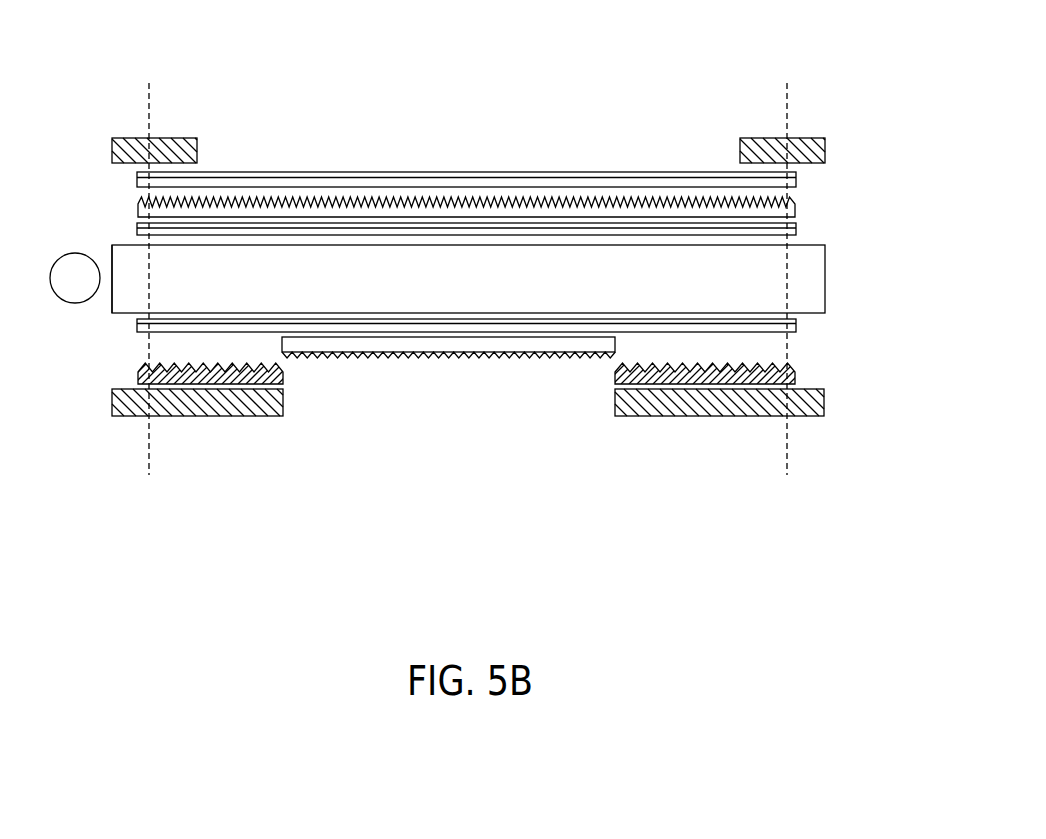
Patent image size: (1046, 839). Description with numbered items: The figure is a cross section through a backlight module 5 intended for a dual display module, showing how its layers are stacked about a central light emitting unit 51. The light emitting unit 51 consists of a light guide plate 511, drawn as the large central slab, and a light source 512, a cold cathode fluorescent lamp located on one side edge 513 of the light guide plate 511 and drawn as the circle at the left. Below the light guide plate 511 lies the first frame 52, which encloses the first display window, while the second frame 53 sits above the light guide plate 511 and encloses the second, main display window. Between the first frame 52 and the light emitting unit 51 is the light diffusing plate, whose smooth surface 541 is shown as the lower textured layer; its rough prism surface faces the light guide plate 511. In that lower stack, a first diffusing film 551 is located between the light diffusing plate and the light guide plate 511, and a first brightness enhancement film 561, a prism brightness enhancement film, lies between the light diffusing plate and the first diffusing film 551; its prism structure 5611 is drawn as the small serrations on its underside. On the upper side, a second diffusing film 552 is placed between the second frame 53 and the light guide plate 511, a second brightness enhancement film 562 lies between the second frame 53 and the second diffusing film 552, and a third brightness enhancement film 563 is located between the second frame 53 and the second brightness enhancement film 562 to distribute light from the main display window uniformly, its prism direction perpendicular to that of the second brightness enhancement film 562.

The backlight module 5 is at (729, 40).
The light emitting unit 51 is at (62, 167).
The light guide plate 511 is at (122, 244).
The light source 512 is at (90, 256).
The side edge 513 is at (110, 298).
The first frame 52 is at (812, 417).
The second frame 53 is at (812, 137).
The smooth surface 541 is at (796, 383).
The first diffusing film 551 is at (796, 326).
The second diffusing film 552 is at (796, 230).
The first brightness enhancement film 561 is at (464, 363).
The microstructures 5611 is at (282, 352).
The second brightness enhancement film 562 is at (795, 210).
The third brightness enhancement film 563 is at (796, 180).